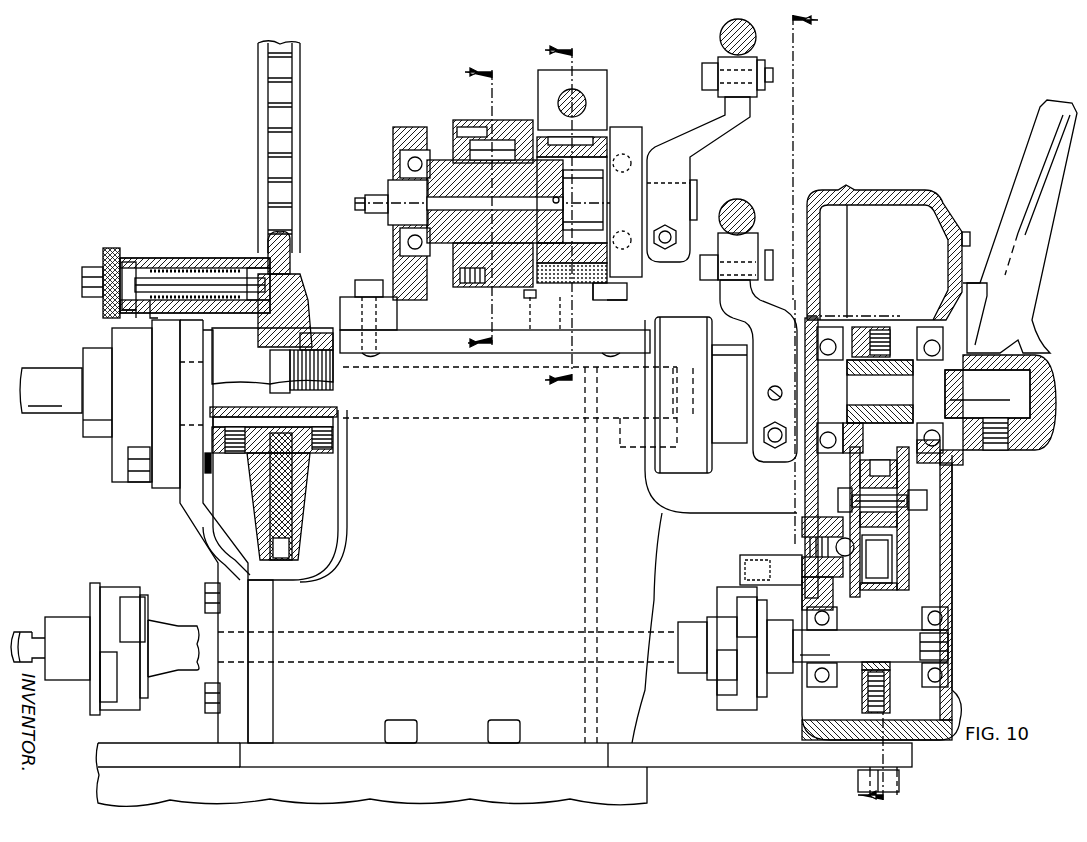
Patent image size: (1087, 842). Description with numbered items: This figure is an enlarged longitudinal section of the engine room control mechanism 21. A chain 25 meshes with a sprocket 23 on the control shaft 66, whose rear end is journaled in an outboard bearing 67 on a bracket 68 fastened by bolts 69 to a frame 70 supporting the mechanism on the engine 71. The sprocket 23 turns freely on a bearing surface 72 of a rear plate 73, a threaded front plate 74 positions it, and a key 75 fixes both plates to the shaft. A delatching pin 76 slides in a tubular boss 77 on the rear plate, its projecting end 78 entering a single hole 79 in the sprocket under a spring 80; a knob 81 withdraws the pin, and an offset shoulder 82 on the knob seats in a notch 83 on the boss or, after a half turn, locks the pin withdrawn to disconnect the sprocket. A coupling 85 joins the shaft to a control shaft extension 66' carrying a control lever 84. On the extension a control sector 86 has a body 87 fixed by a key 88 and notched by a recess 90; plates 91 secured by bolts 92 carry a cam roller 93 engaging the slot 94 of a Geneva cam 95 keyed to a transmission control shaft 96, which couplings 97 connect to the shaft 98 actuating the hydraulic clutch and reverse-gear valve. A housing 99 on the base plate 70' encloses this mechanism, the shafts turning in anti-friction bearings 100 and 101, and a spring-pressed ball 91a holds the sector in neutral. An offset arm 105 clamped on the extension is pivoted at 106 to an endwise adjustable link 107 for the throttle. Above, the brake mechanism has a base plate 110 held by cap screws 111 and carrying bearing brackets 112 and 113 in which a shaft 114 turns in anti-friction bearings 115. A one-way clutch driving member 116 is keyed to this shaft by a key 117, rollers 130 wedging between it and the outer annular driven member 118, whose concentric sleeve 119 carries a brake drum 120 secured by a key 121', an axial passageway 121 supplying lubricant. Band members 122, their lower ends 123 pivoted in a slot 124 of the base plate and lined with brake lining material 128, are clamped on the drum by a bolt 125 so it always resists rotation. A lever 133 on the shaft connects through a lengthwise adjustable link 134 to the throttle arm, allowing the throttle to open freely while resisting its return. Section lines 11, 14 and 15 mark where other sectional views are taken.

The engine room control mechanism 21 is at (898, 188).
The sprocket 23 is at (282, 520).
The chain 25 is at (262, 90).
The control shaft 66 is at (51, 375).
The control shaft extension 66' is at (1012, 402).
The outboard bearing 67 is at (125, 448).
The bracket 68 is at (188, 505).
The bolts 69 is at (208, 585).
The frame 70 is at (413, 642).
The base plate 70' is at (576, 757).
The engine 71 is at (640, 780).
The bearing surface 72 is at (270, 368).
The rear plate 73 is at (262, 478).
The front plate 74 is at (292, 500).
The key 75 is at (236, 410).
The delatching pin 76 is at (193, 278).
The tubular boss 77 is at (228, 258).
The forwardly projecting end 78 is at (290, 270).
The hole 79 is at (292, 290).
The spring 80 is at (165, 268).
The knob 81 is at (112, 248).
The offset shoulder 82 is at (140, 312).
The notch 83 is at (154, 320).
The control lever 84 is at (1035, 145).
The coupling 85 is at (700, 470).
The control sector 86 is at (866, 327).
The body 87 is at (855, 423).
The key 88 is at (900, 378).
The notch or recess 90 is at (895, 530).
The front and rear plates 91 is at (830, 475).
The spring-pressed ball 91a is at (805, 575).
The bolts 92 is at (927, 498).
The cam roller 93 is at (897, 583).
The slot 94 is at (880, 560).
The Geneva cam 95 is at (890, 678).
The transmission control shaft 96 is at (950, 650).
The couplings 97 is at (128, 705).
The shaft 98 is at (25, 630).
The housing 99 is at (952, 520).
The anti-friction bearings 100 is at (818, 360).
The anti-friction bearings 101 is at (948, 620).
The offset arm 105 is at (722, 290).
The pivotal connection 106 is at (770, 250).
The endwise adjustable link 107 is at (745, 210).
The base plate 110 is at (512, 330).
The cap screws 111 is at (378, 270).
The upright bearing bracket 112 is at (630, 128).
The upright bearing bracket 113 is at (403, 128).
The shaft 114 is at (400, 190).
The anti-friction bearings 115 is at (400, 158).
The driving member 116 is at (508, 140).
The key 117 is at (498, 140).
The outer annular member 118 is at (476, 120).
The concentric sleeve 119 is at (563, 225).
The brake drum 120 is at (607, 268).
The axial passageway 121 is at (579, 188).
The key 121' is at (597, 109).
The brake clamping band members 122 is at (600, 78).
The lower ends 123 is at (562, 372).
The slot 124 is at (530, 300).
The bolt 125 is at (578, 92).
The brake lining material 128 is at (620, 300).
The rollers 130 is at (472, 285).
The lever 133 is at (728, 120).
The lengthwise adjustable link 134 is at (725, 25).
The section line 11 is at (838, 408).
The section line 14 is at (546, 214).
The section line 15 is at (466, 208).